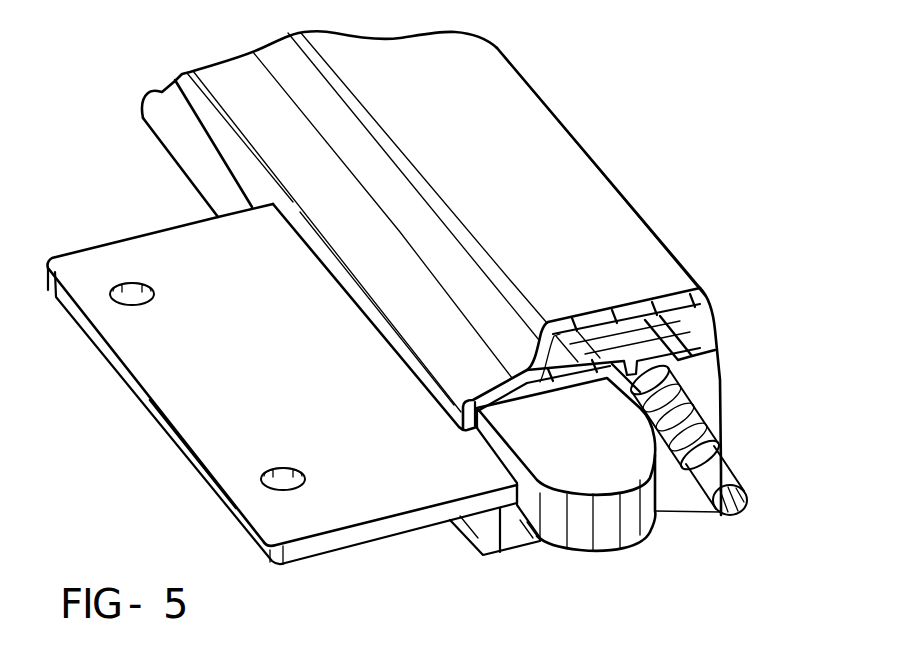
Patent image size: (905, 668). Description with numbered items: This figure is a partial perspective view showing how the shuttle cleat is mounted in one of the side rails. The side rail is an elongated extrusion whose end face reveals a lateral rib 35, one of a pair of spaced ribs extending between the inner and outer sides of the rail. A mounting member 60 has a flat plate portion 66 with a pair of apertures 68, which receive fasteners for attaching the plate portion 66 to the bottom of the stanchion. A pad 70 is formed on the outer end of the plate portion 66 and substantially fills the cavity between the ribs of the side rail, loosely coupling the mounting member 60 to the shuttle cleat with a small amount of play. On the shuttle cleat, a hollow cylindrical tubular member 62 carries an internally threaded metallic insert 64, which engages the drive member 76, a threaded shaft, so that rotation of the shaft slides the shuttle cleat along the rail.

The lateral rib 35 is at (587, 372).
The mounting member 60 is at (127, 331).
The cylindrical tubular member 62 is at (713, 353).
The internally threaded metallic insert 64 is at (697, 395).
The plate portion 66 is at (187, 413).
The apertures 68 is at (132, 283).
The pad 70 is at (588, 543).
The drive member 76 is at (740, 493).